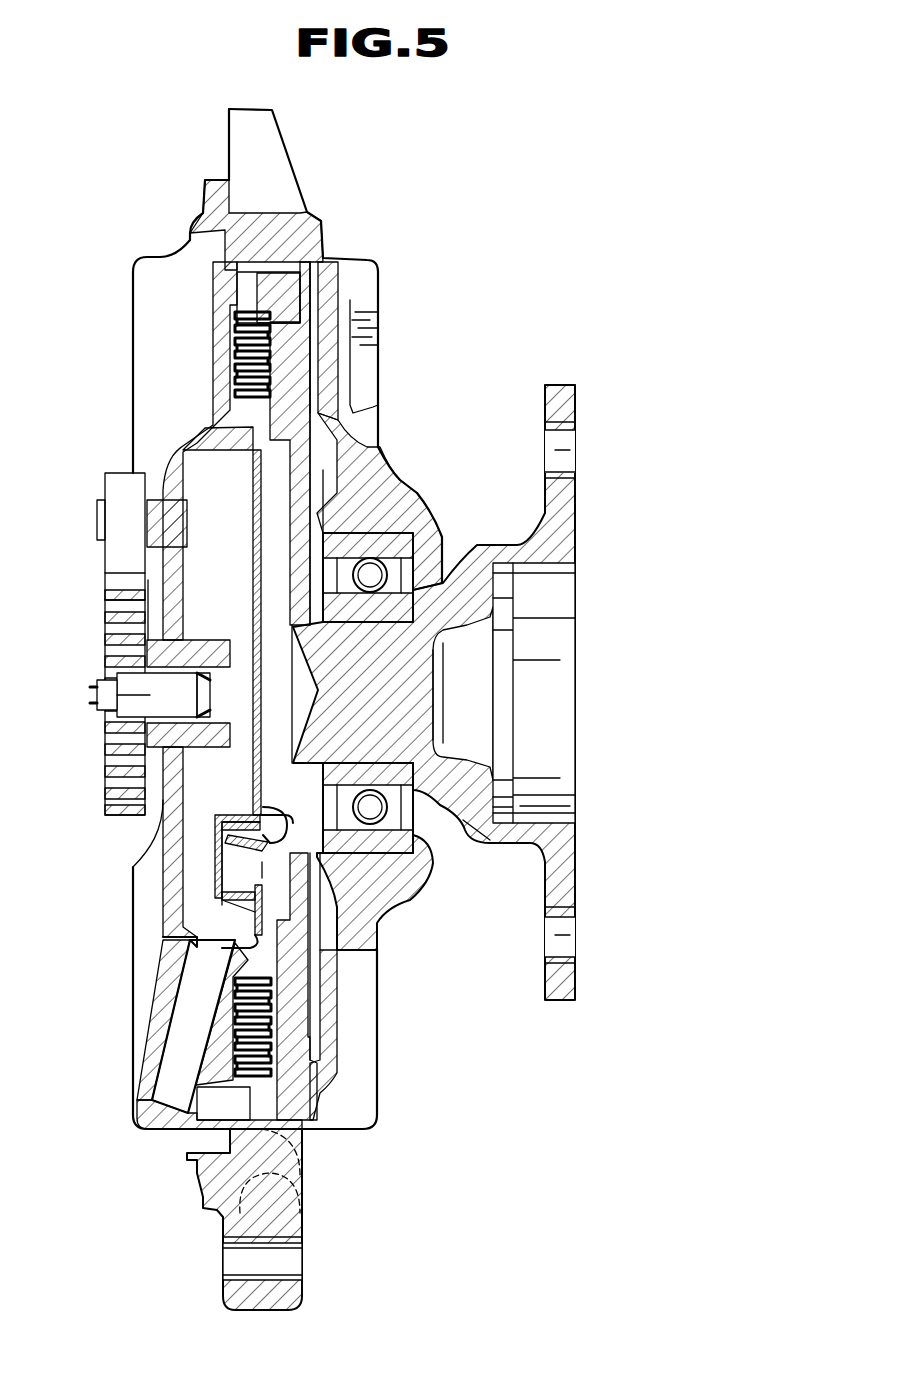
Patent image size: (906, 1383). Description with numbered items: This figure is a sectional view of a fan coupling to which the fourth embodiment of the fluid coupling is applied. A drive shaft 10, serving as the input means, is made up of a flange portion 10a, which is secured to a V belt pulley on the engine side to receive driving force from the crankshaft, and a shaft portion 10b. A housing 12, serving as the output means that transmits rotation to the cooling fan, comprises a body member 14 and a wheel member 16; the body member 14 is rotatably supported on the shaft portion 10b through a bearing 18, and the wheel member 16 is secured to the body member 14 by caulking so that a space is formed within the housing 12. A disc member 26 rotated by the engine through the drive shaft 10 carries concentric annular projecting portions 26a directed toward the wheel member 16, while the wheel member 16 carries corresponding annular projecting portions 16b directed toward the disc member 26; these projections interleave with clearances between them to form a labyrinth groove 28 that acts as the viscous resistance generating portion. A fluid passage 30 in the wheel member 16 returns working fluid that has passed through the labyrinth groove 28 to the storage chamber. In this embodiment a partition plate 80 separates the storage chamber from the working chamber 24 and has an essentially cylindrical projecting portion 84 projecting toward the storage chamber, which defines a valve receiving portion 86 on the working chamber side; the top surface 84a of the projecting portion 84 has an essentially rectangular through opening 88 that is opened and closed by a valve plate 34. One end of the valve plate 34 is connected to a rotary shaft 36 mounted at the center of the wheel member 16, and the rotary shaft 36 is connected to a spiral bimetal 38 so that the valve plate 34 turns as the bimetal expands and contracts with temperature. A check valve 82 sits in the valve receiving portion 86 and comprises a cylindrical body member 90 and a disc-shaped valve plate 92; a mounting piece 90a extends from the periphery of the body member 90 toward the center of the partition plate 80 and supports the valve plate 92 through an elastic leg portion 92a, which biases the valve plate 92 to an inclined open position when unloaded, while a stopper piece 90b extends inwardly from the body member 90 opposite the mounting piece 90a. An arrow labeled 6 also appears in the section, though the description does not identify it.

The groove 6 is at (273, 868).
The drive shaft 10 is at (583, 548).
The flange portion 10a is at (572, 386).
The shaft portion 10b is at (413, 680).
The housing 12 is at (357, 258).
The body member 14 is at (353, 407).
The wheel member 16 is at (178, 443).
The annular projecting portions 16b is at (310, 337).
The bearing 18 is at (437, 524).
The working chamber 24 is at (398, 481).
The disc member 26 is at (300, 540).
The annular projecting portions 26a is at (268, 333).
The labyrinth groove 28 is at (280, 292).
The fluid passage 30 is at (160, 1042).
The valve plate 34 is at (210, 852).
The rotary shaft 36 is at (128, 714).
The spiral bimetal 38 is at (105, 486).
The partition plate 80 is at (253, 627).
The check valve 82 is at (290, 912).
The projecting portion 84 is at (215, 820).
The top surface 84a is at (215, 937).
The valve receiving portion 86 is at (215, 880).
The through opening 88 is at (220, 907).
The body member 90 is at (170, 972).
The mounting piece 90a is at (232, 787).
The stopper piece 90b is at (268, 912).
The valve plate 92 is at (300, 873).
The elastic leg portion 92a is at (493, 848).